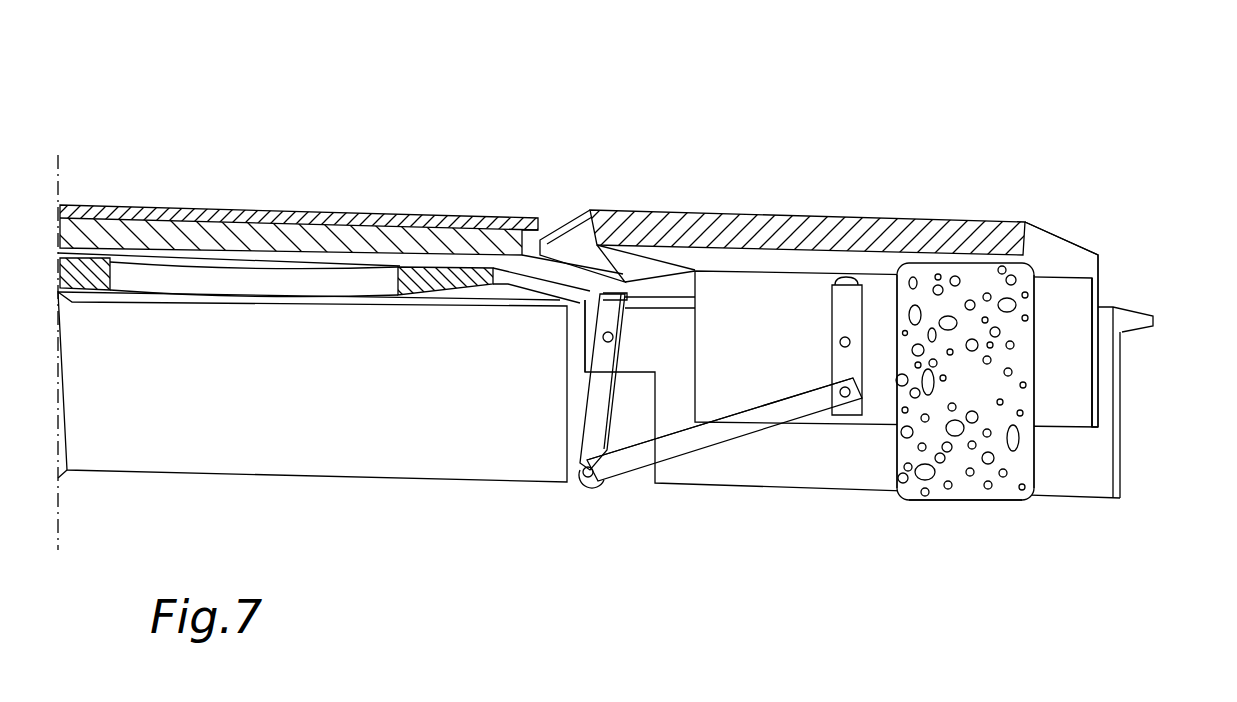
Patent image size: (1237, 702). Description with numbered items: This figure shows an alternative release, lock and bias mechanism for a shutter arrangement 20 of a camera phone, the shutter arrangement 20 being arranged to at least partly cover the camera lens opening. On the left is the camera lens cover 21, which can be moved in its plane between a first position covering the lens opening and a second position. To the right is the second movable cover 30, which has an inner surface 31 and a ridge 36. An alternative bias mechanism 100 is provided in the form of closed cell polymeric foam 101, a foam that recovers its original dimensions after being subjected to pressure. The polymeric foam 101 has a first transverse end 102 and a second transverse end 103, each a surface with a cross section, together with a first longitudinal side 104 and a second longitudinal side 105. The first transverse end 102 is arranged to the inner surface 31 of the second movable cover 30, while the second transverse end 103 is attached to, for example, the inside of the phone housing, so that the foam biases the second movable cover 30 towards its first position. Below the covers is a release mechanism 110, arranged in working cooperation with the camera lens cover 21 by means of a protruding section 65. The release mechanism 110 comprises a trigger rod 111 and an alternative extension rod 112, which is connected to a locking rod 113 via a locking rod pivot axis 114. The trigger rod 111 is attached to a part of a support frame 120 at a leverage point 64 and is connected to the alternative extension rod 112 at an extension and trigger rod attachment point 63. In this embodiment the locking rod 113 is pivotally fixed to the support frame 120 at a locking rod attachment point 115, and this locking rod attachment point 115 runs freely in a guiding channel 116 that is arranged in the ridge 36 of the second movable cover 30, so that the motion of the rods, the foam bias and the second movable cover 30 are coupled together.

The shutter arrangement 20 is at (782, 91).
The camera lens cover 21 is at (297, 205).
The second movable cover 30 is at (757, 209).
The inner surface 31 is at (1050, 270).
The ridge 36 is at (1071, 348).
The extension and trigger rod attachment point 63 is at (588, 485).
The leverage point 64 is at (600, 338).
The protruding section 65 is at (614, 337).
The bias mechanism 100 is at (990, 384).
The polymeric foam 101 is at (988, 389).
The first transverse end 102 is at (946, 262).
The second transverse end 103 is at (948, 510).
The first longitudinal side 104 is at (884, 455).
The second longitudinal side 105 is at (1040, 400).
The release mechanism 110 is at (726, 446).
The trigger rod 111 is at (597, 435).
The alternative extension rod 112 is at (631, 466).
The locking rod 113 is at (840, 365).
The locking rod pivot axis 114 is at (851, 400).
The locking rod attachment point 115 is at (839, 342).
The guiding channel 116 is at (835, 281).
The support frame 120 is at (1100, 443).